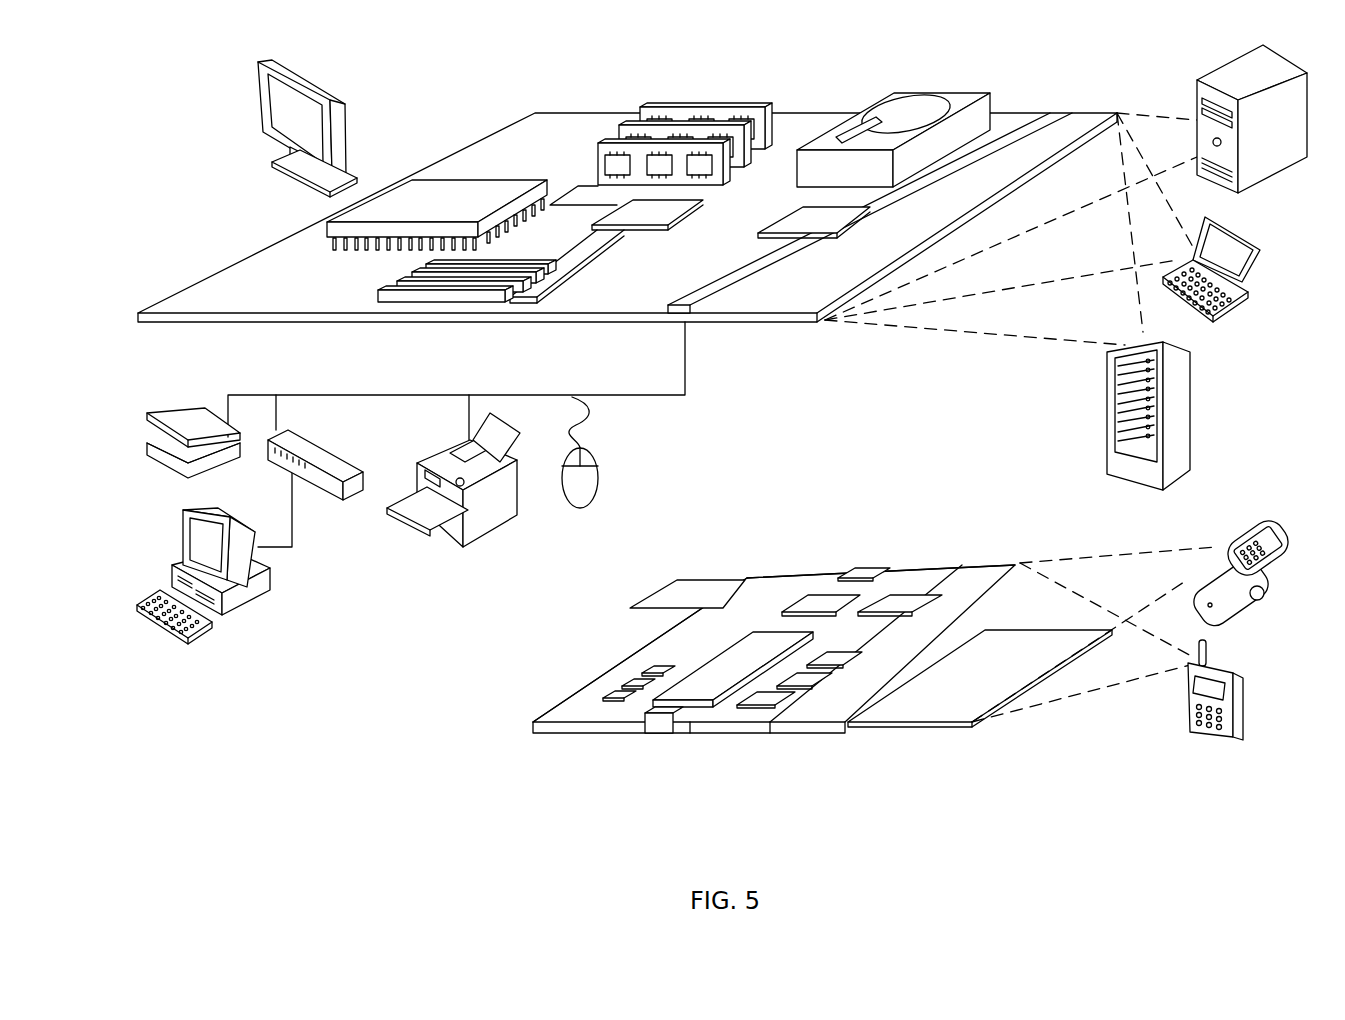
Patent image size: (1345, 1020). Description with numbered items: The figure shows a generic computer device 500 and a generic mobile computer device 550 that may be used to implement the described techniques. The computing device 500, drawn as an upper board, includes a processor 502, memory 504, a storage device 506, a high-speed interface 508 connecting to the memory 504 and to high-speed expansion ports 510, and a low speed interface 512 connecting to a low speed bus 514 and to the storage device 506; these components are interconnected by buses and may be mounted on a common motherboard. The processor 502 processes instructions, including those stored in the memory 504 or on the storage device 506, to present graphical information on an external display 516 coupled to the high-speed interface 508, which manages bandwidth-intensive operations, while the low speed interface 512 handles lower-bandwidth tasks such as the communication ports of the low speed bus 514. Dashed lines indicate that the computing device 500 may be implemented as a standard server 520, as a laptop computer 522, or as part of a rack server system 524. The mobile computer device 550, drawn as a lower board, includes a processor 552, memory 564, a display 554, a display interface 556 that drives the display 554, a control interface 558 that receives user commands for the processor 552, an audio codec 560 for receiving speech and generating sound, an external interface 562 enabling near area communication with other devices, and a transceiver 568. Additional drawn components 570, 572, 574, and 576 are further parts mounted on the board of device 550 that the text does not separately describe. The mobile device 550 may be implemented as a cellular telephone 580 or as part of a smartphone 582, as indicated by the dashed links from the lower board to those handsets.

The computing device 500 is at (448, 86).
The processor 502 is at (327, 230).
The memory 504 is at (658, 108).
The storage device 506 is at (885, 93).
The high-speed interface 508 is at (623, 213).
The high-speed expansion ports 510 is at (387, 289).
The low speed interface 512 is at (795, 213).
The low speed bus 514 is at (697, 312).
The display 516 is at (262, 60).
The standard server 520 is at (1197, 100).
The laptop computer 522 is at (1265, 252).
The rack server system 524 is at (1108, 437).
The mobile computer device 550 is at (512, 737).
The processor 552 is at (706, 692).
The display 554 is at (940, 708).
The display interface 556 is at (778, 705).
The control interface 558 is at (800, 683).
The audio codec 560 is at (835, 658).
The external interface 562 is at (673, 735).
The memory 564 is at (623, 688).
The transceiver 568 is at (900, 598).
The chip 570 is at (872, 572).
The board edge 572 is at (755, 578).
The plate 574 is at (690, 582).
The component 576 is at (822, 602).
The cellular telephone 580 is at (1246, 524).
The smartphone 582 is at (1190, 700).